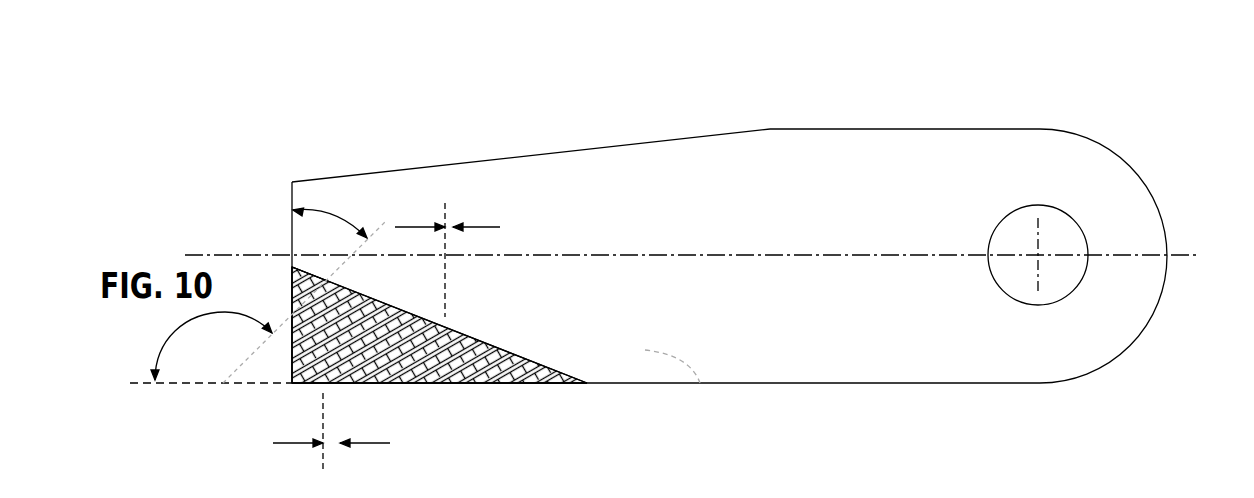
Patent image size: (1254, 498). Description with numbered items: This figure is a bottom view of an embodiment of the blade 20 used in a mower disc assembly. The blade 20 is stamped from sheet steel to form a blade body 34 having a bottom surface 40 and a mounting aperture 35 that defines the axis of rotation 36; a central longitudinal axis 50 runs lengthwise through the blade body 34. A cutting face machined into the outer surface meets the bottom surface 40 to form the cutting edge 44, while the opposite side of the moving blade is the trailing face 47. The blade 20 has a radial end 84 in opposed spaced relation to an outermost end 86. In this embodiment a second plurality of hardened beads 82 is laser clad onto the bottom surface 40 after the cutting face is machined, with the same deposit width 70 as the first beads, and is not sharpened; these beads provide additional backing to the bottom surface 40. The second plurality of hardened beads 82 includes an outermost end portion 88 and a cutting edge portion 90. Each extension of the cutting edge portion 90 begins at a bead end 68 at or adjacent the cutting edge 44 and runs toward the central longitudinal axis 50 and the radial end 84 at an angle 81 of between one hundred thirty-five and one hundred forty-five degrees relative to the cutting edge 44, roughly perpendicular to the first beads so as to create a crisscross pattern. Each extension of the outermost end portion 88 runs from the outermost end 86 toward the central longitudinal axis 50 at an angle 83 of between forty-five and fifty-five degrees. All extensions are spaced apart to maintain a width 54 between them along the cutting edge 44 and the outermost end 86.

The blade 20 is at (736, 238).
The blade body 34 is at (692, 151).
The mounting aperture 35 is at (1082, 230).
The axis of rotation 36 is at (1038, 255).
The bottom surface 40 is at (792, 367).
The cutting edge 44 is at (403, 339).
The trailing face 47 is at (432, 167).
The central longitudinal axis 50 is at (187, 254).
The width 54 is at (316, 431).
The bead end 68 is at (522, 385).
The width 70 is at (470, 260).
The angle 81 is at (168, 337).
The second plurality of hardened beads 82 is at (292, 272).
The angle 83 is at (340, 218).
The radial end 84 is at (1127, 346).
The outermost end 86 is at (291, 200).
The outermost end portion 88 is at (330, 276).
The cutting edge portion 90 is at (410, 385).